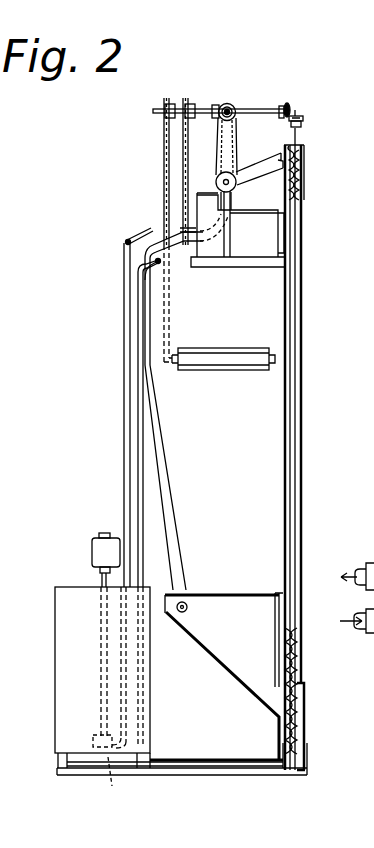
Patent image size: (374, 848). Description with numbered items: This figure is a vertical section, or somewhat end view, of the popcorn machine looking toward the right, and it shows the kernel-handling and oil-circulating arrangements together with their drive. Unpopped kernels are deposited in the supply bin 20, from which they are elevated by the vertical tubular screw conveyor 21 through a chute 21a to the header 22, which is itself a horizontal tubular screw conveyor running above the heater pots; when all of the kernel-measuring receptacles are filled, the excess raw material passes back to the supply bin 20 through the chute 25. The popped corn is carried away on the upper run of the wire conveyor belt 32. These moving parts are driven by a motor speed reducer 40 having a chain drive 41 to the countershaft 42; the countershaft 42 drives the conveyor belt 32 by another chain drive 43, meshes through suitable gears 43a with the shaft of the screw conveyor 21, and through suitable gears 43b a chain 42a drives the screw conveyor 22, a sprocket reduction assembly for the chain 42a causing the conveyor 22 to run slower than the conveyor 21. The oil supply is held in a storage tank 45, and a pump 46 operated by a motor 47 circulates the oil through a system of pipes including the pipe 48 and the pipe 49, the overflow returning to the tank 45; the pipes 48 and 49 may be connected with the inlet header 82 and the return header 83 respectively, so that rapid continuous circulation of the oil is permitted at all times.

The supply bin 20 is at (228, 653).
The vertical tubular screw conveyor 21 is at (304, 184).
The chute 21a is at (260, 168).
The header 22 is at (236, 188).
The chute 25 is at (163, 477).
The conveyor belt 32 is at (244, 377).
The motor speed reducer 40 is at (253, 252).
The chain drive 41 is at (186, 158).
The countershaft 42 is at (263, 109).
The chain 42a is at (236, 136).
The chain drive 43 is at (164, 155).
The gears 43a is at (297, 116).
The gears 43b is at (219, 103).
The storage tank 45 is at (72, 588).
The pump 46 is at (117, 782).
The motor 47 is at (93, 548).
The pipe 48 is at (124, 424).
The pipe 49 is at (140, 474).
The inlet header 82 is at (128, 242).
The return header 83 is at (157, 264).